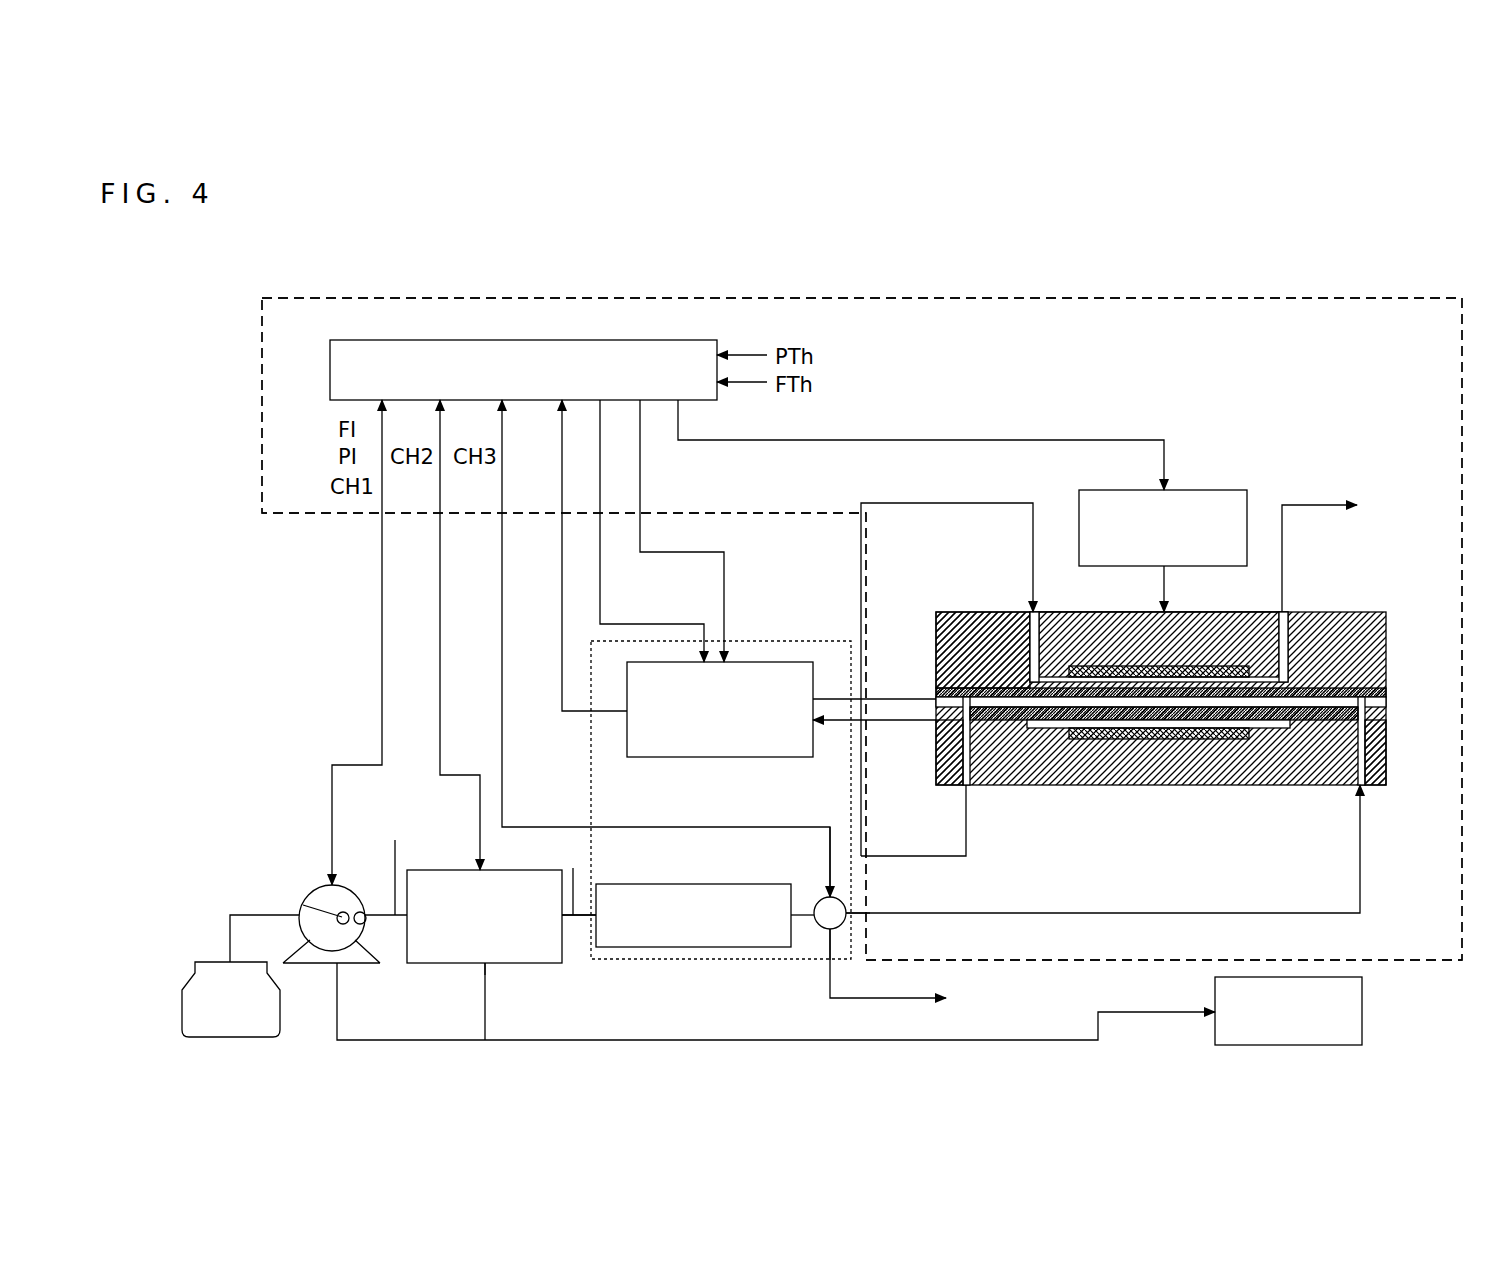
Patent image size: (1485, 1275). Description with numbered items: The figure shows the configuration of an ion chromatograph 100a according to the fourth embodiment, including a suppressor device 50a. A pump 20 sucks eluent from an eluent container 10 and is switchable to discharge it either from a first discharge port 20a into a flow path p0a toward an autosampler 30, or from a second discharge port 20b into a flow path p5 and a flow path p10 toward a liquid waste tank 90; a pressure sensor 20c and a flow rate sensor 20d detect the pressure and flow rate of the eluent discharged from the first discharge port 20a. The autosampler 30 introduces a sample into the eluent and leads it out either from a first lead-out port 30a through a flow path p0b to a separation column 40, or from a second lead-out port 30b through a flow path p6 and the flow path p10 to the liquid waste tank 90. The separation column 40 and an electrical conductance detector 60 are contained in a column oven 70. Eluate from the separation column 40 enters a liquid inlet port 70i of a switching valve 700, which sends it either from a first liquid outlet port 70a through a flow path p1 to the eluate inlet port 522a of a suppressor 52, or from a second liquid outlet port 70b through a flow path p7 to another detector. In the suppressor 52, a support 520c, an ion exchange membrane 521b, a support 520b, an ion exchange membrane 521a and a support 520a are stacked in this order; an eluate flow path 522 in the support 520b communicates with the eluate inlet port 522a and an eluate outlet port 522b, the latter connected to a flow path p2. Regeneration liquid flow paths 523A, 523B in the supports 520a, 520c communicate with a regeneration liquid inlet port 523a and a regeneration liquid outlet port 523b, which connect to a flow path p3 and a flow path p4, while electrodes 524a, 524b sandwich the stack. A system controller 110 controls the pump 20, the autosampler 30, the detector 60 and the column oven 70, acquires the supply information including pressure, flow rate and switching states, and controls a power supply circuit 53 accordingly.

The ion chromatograph 100a is at (208, 272).
The suppressor device 50a is at (322, 297).
The system controller 110 is at (330, 360).
The power supply circuit 53 is at (1205, 496).
The column oven 70 is at (758, 636).
The electrical conductance detector 60 is at (680, 762).
The suppressor 52 is at (1386, 632).
The support 520a is at (945, 680).
The support 520b is at (1132, 710).
The support 520c is at (945, 745).
The ion exchange membrane 521a is at (1415, 676).
The ion exchange membrane 521b is at (1386, 715).
The eluate flow path 522 is at (1090, 725).
The eluate inlet port 522a is at (1365, 785).
The eluate outlet port 522b is at (963, 785).
The regeneration liquid inlet port 523a is at (1028, 612).
The regeneration liquid outlet port 523b is at (1290, 612).
The regeneration liquid flow path 523A is at (1235, 685).
The regeneration liquid flow path 523B is at (1230, 740).
The electrode 524a is at (1140, 668).
The electrode 524b is at (1145, 738).
The eluent container 10 is at (215, 962).
The pump 20 is at (325, 885).
The first discharge port 20a is at (362, 912).
The second discharge port 20b is at (328, 972).
The pressure sensor 20c is at (338, 913).
The flow rate sensor 20d is at (305, 905).
The autosampler 30 is at (428, 870).
The first lead-out port 30a is at (563, 920).
The second lead-out port 30b is at (485, 967).
The separation column 40 is at (612, 884).
The switching valve 700 is at (838, 928).
The liquid inlet port 70i is at (815, 895).
The first liquid outlet port 70a is at (845, 917).
The second liquid outlet port 70b is at (828, 930).
The liquid waste tank 90 is at (1362, 1003).
The flow path p1 is at (1280, 915).
The flow path p2 is at (935, 858).
The flow path p3 is at (983, 503).
The flow path p4 is at (1300, 505).
The flow path p5 is at (350, 1040).
The flow path p6 is at (485, 1015).
The flow path p7 is at (870, 998).
The flow path p10 is at (780, 1040).
The flow path p0a is at (398, 838).
The flow path p0b is at (574, 876).